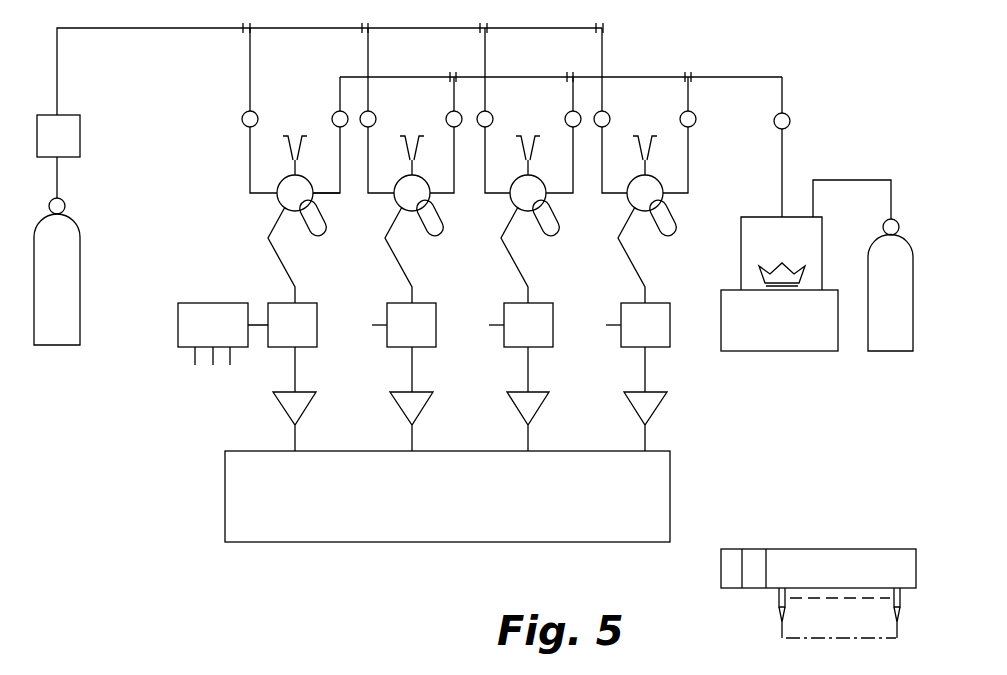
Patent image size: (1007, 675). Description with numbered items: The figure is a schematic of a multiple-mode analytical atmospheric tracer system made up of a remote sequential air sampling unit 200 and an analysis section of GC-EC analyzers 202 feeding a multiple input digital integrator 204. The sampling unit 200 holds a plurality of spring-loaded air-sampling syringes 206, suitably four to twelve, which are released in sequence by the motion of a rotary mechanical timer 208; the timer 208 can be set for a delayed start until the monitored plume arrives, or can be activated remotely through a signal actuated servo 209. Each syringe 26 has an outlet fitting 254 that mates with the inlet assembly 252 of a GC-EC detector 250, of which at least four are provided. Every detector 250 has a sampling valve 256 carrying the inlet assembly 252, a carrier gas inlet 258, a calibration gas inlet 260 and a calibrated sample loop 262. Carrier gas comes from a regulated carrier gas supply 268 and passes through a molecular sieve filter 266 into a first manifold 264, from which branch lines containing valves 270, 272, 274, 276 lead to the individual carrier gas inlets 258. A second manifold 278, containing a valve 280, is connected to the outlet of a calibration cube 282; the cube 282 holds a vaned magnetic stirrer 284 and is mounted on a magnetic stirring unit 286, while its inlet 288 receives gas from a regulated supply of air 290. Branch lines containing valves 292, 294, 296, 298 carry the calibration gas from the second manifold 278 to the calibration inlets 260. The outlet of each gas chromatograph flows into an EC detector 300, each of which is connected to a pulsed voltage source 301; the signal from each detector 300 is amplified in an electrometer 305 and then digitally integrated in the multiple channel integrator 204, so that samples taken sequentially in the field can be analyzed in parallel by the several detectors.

The syringe 26 is at (787, 600).
The remote sequential air sampling unit 200 is at (822, 532).
The GC-EC analyzer 202 is at (498, 278).
The multiple input digital integrator 204 is at (242, 451).
The air-sampling syringe 206 is at (795, 629).
The rotary mechanical timer 208 is at (757, 549).
The signal actuated servo 209 is at (731, 549).
The GC-EC detector 250 is at (208, 182).
The inlet assembly 252 is at (300, 120).
The outlet fitting 254 is at (783, 620).
The sampling valve 256 is at (280, 202).
The carrier gas inlet 258 is at (250, 157).
The calibration gas inlet 260 is at (322, 196).
The calibrated sample loop 262 is at (318, 240).
The first manifold 264 is at (147, 31).
The pressure regulator 266 is at (80, 124).
The regulated carrier gas supply 268 is at (80, 258).
The valve 270 is at (246, 111).
The valve 272 is at (362, 112).
The valve 274 is at (479, 112).
The valve 276 is at (596, 112).
The second manifold 278 is at (740, 77).
The valve 280 is at (789, 114).
The calibration cube 282 is at (764, 198).
The vaned magnetic stirrer 284 is at (800, 272).
The magnetic stirring unit 286 is at (808, 351).
The inlet 288 is at (858, 180).
The regulated supply of air 290 is at (900, 352).
The valve 292 is at (683, 111).
The valve 294 is at (568, 111).
The valve 296 is at (449, 111).
The valve 298 is at (335, 111).
The EC detector 300 is at (310, 303).
The pulsed voltage source 301 is at (192, 303).
The electrometer 305 is at (303, 392).